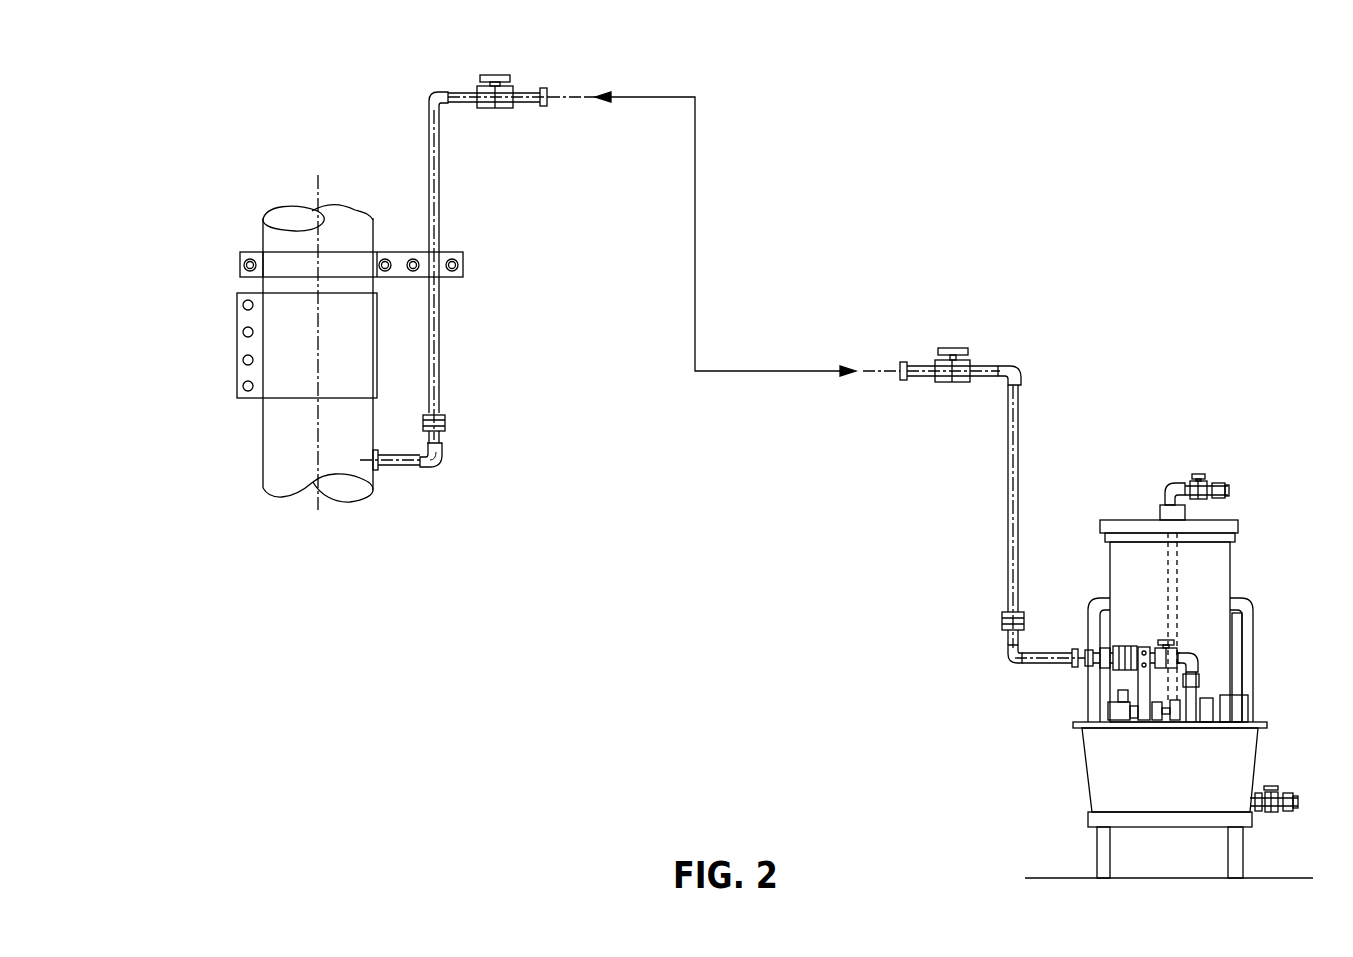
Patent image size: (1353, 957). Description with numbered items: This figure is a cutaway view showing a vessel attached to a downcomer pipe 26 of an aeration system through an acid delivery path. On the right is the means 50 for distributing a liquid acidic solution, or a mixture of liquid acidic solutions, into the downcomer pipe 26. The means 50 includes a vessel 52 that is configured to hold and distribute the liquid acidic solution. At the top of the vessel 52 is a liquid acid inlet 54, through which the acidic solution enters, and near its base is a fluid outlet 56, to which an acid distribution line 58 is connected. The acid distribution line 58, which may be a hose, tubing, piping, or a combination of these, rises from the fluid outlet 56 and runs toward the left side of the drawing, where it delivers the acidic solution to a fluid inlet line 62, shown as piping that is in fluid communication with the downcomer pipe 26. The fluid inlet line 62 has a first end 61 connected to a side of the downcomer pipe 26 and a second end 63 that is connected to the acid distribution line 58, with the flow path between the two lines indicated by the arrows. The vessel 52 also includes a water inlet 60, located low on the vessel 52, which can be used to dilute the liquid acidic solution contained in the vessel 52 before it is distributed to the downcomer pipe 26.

The downcomer pipe 26 is at (263, 238).
The means for distributing a liquid acidic solution 50 is at (1142, 365).
The vessel 52 is at (1237, 525).
The liquid acid inlet 54 is at (1175, 488).
The fluid outlet 56 is at (1100, 680).
The acid distribution line 58 is at (1005, 478).
The water inlet 60 is at (1284, 788).
The first end 61 is at (396, 470).
The fluid inlet line 62 is at (440, 168).
The second end 63 is at (530, 90).